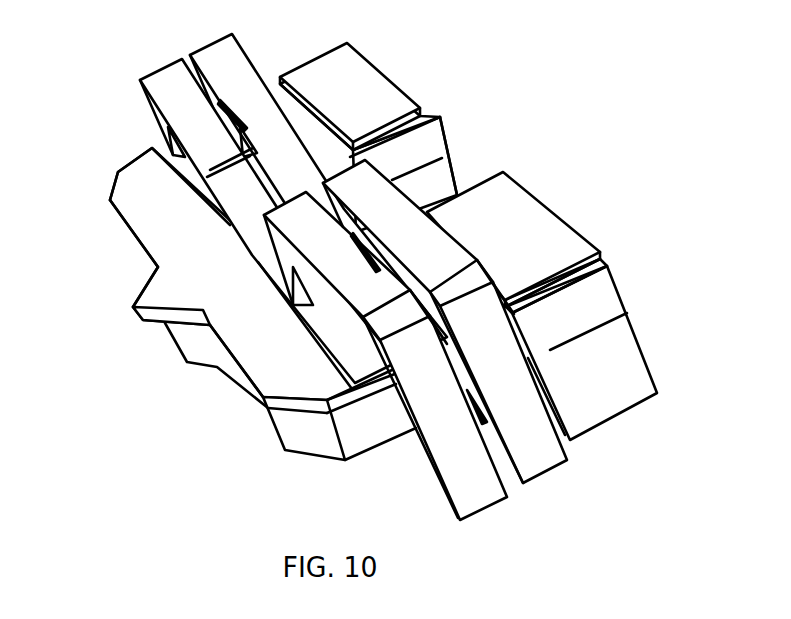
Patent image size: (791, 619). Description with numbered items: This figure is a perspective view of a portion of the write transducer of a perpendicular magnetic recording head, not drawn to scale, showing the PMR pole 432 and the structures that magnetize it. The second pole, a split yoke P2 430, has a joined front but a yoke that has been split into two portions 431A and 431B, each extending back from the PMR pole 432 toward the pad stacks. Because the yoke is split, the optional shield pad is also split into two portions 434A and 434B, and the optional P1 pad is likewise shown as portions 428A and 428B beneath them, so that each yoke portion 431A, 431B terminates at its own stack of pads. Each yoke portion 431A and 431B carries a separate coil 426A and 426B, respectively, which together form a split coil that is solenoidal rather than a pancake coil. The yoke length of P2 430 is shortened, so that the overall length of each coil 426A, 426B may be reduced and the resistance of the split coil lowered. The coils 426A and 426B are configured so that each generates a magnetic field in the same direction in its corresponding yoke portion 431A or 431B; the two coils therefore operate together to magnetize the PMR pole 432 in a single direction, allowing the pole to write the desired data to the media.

The coil 426A is at (103, 100).
The coil 426B is at (540, 512).
The P1 pad 428A is at (450, 172).
The P1 pad 428B is at (619, 414).
The split yoke P2 430 is at (187, 409).
The yoke portion 431A is at (431, 133).
The yoke portion 431B is at (615, 283).
The PMR pole 432 is at (117, 180).
The shield pad portion 434A is at (382, 65).
The shield pad portion 434B is at (556, 212).